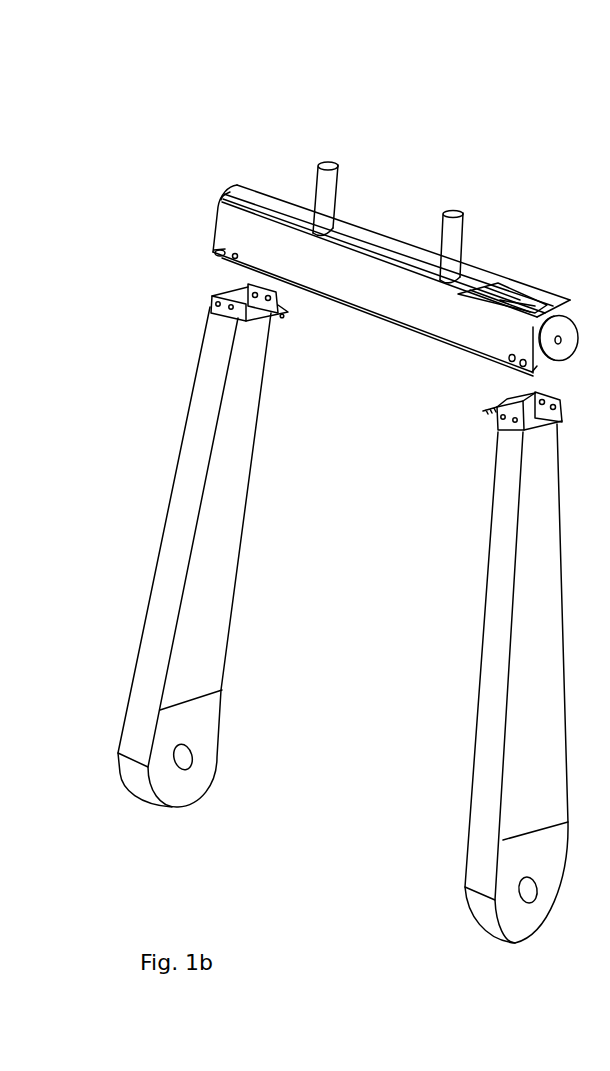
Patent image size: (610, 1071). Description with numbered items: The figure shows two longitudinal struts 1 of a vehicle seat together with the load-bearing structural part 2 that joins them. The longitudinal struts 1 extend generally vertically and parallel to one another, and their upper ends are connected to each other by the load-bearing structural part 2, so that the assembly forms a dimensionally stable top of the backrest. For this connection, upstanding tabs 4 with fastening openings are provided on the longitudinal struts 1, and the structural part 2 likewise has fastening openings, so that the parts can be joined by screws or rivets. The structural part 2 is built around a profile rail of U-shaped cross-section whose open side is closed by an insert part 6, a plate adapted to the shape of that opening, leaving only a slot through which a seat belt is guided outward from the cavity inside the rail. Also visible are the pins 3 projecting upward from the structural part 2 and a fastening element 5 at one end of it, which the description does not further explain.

The longitudinal strut 1 is at (500, 557).
The load-bearing structural part 2 is at (400, 238).
The pins 3 is at (328, 182).
The upstanding tab 4 is at (213, 307).
The fastening element 5 is at (213, 250).
The insert part 6 is at (273, 208).